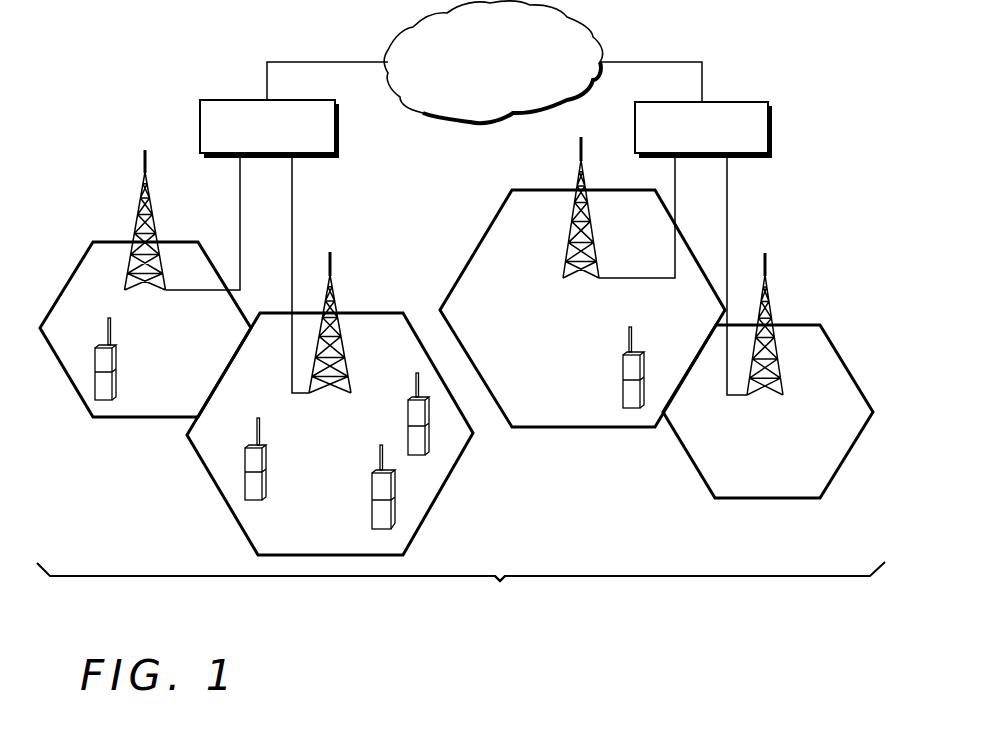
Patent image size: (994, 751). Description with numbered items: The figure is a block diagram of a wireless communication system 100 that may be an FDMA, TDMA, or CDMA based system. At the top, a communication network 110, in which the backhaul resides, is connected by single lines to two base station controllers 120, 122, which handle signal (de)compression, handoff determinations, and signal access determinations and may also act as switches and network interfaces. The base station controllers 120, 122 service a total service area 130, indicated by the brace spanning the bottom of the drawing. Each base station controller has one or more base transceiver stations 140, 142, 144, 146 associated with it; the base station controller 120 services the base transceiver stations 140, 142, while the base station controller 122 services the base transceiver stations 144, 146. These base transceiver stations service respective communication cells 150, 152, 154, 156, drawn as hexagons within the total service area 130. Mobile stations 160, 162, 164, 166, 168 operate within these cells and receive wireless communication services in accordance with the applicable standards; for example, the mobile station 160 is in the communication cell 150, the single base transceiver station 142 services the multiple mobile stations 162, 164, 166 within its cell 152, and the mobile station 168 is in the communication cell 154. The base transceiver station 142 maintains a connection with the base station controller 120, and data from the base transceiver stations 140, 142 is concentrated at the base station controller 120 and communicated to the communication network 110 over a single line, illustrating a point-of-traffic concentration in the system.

The wireless communication system 100 is at (137, 632).
The communication network 110 is at (470, 125).
The base station controller 120 is at (336, 126).
The base station controller 122 is at (770, 126).
The total service area 130 is at (500, 594).
The base transceiver station 140 is at (137, 198).
The base transceiver station 142 is at (337, 297).
The base transceiver station 144 is at (570, 219).
The base transceiver station 146 is at (776, 296).
The communication cell 150 is at (80, 258).
The communication cell 152 is at (222, 502).
The communication cell 154 is at (490, 222).
The communication cell 156 is at (836, 347).
The mobile station 160 is at (113, 362).
The mobile station 162 is at (264, 450).
The mobile station 164 is at (380, 490).
The mobile station 166 is at (410, 413).
The mobile station 168 is at (622, 372).